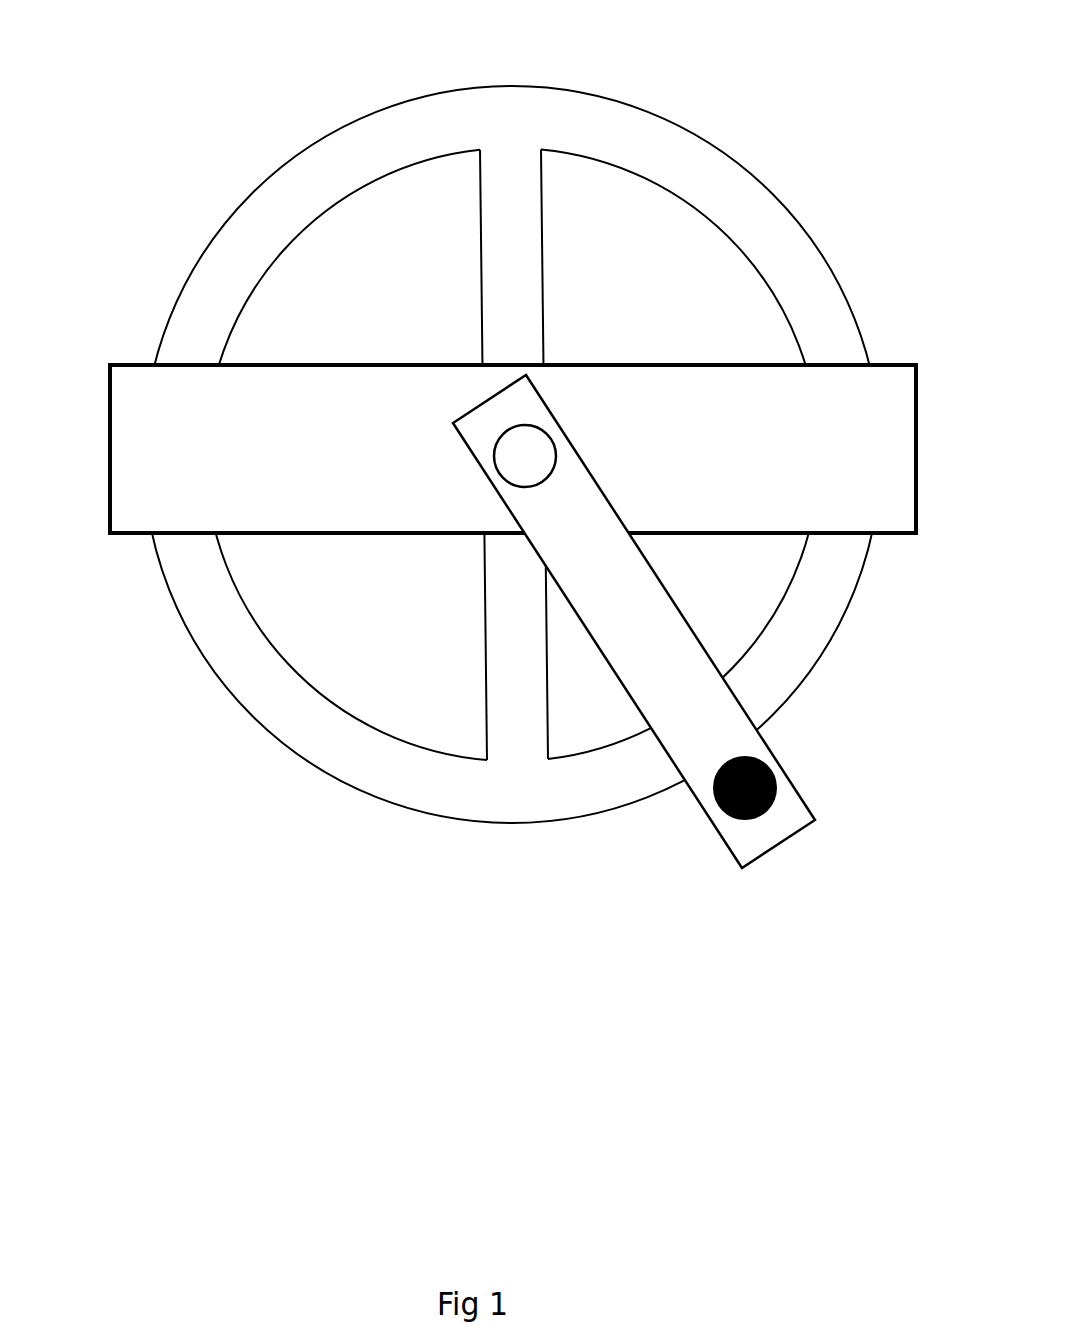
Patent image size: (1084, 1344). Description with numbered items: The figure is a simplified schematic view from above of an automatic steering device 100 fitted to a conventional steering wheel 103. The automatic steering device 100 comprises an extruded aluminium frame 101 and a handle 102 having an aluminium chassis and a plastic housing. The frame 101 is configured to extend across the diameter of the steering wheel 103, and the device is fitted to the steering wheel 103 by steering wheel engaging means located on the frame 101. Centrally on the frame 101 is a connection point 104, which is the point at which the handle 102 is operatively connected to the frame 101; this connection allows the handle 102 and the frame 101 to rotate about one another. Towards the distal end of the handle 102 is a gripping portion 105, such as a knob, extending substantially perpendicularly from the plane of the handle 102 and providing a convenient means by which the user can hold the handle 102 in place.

The automatic steering device 100 is at (500, 468).
The frame 101 is at (479, 426).
The handle 102 is at (644, 651).
The steering wheel 103 is at (512, 416).
The connection point 104 is at (480, 504).
The gripping portion 105 is at (686, 829).